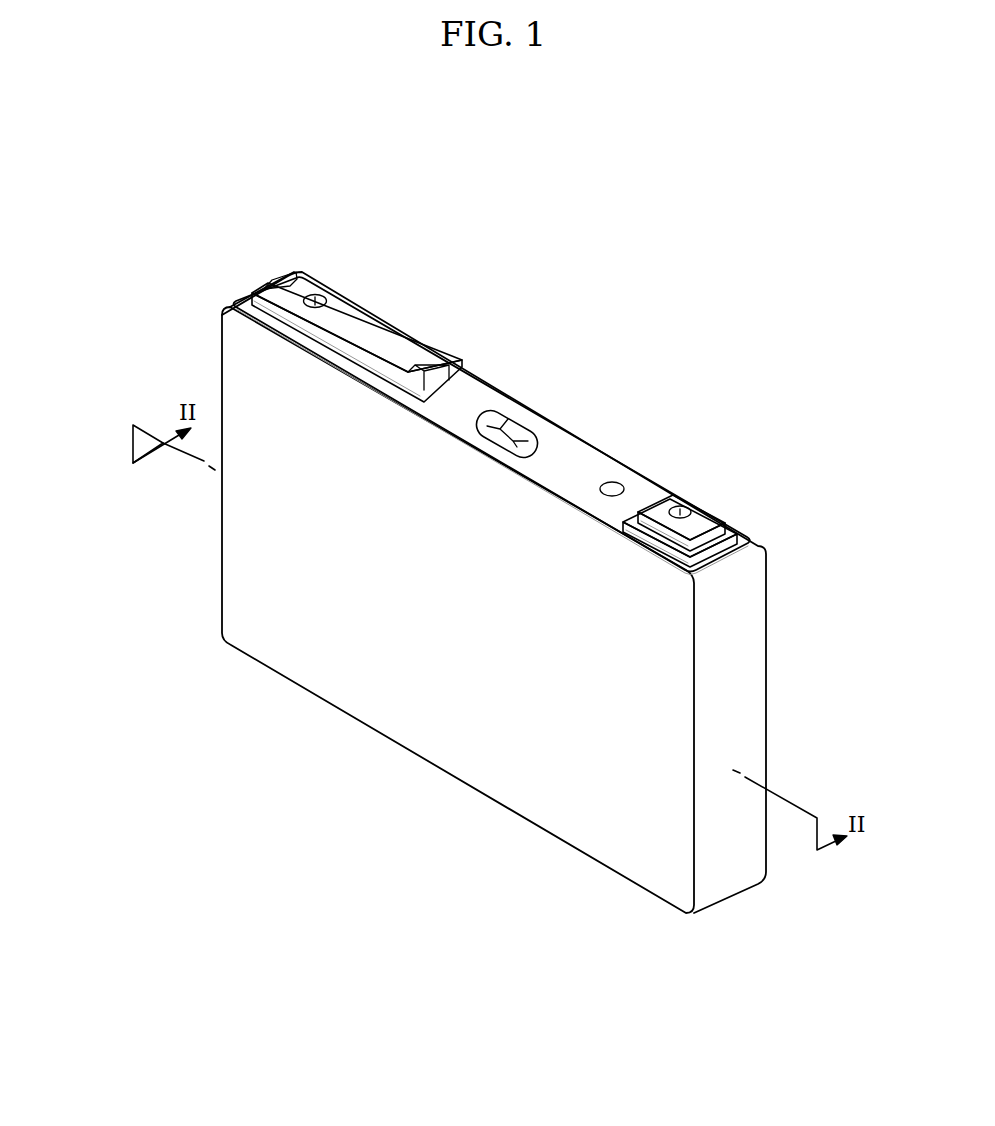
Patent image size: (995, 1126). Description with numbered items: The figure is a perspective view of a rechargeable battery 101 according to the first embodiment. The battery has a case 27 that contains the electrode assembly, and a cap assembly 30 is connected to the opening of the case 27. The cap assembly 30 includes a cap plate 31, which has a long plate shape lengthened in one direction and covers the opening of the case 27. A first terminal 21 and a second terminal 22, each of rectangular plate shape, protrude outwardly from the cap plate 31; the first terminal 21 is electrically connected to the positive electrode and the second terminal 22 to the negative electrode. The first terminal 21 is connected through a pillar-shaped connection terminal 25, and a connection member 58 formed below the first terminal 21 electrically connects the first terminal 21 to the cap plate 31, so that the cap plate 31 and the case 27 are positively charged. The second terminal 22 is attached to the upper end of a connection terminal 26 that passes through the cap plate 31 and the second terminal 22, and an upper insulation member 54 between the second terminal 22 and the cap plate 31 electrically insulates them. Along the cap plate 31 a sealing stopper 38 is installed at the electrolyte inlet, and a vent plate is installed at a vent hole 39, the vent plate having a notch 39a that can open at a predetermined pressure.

The rechargeable battery 101 is at (566, 224).
The first terminal 21 is at (716, 498).
The second terminal 22 is at (357, 313).
The connection terminal 25 is at (681, 506).
The connection terminal 26 is at (316, 294).
The case 27 is at (408, 723).
The cap assembly 30 is at (492, 425).
The cap plate 31 is at (470, 395).
The sealing stopper 38 is at (614, 484).
The vent hole 39 is at (534, 404).
The notch 39a is at (517, 438).
The upper insulation member 54 is at (416, 333).
The connection member 58 is at (742, 516).